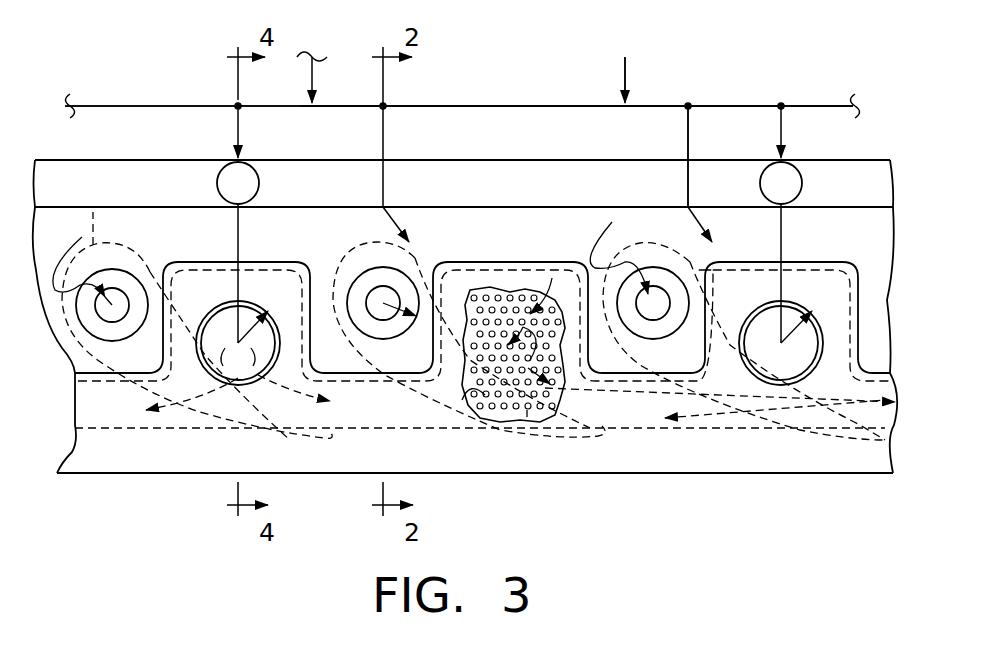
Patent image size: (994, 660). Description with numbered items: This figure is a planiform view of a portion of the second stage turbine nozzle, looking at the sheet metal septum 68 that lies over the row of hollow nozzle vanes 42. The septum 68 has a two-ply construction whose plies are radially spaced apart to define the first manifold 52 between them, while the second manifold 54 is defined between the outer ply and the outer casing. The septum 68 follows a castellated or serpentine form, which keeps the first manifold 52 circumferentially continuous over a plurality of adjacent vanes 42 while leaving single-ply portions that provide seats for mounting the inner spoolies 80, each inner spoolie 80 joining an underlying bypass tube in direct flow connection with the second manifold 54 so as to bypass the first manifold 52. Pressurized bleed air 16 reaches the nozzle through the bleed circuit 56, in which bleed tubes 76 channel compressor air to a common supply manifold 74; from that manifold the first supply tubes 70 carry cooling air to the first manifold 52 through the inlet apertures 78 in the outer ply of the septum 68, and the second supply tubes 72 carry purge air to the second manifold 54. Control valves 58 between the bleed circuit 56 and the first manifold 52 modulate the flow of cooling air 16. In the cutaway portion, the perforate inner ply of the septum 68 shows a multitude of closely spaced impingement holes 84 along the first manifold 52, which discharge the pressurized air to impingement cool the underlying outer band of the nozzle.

The pressurized bleed air 16 is at (386, 299).
The nozzle vanes 42 is at (94, 212).
The first manifold 52 is at (480, 415).
The second manifold 54 is at (557, 248).
The bleed circuit 56 is at (456, 104).
The control valves 58 is at (803, 186).
The septum 68 is at (670, 418).
The first supply tubes 70 is at (784, 240).
The second supply tubes 72 is at (688, 175).
The common supply manifold 74 is at (531, 105).
The bleed tubes 76 is at (610, 57).
The inlet apertures 78 is at (249, 305).
The inner spoolie 80 is at (656, 300).
The impingement holes 84 is at (527, 417).